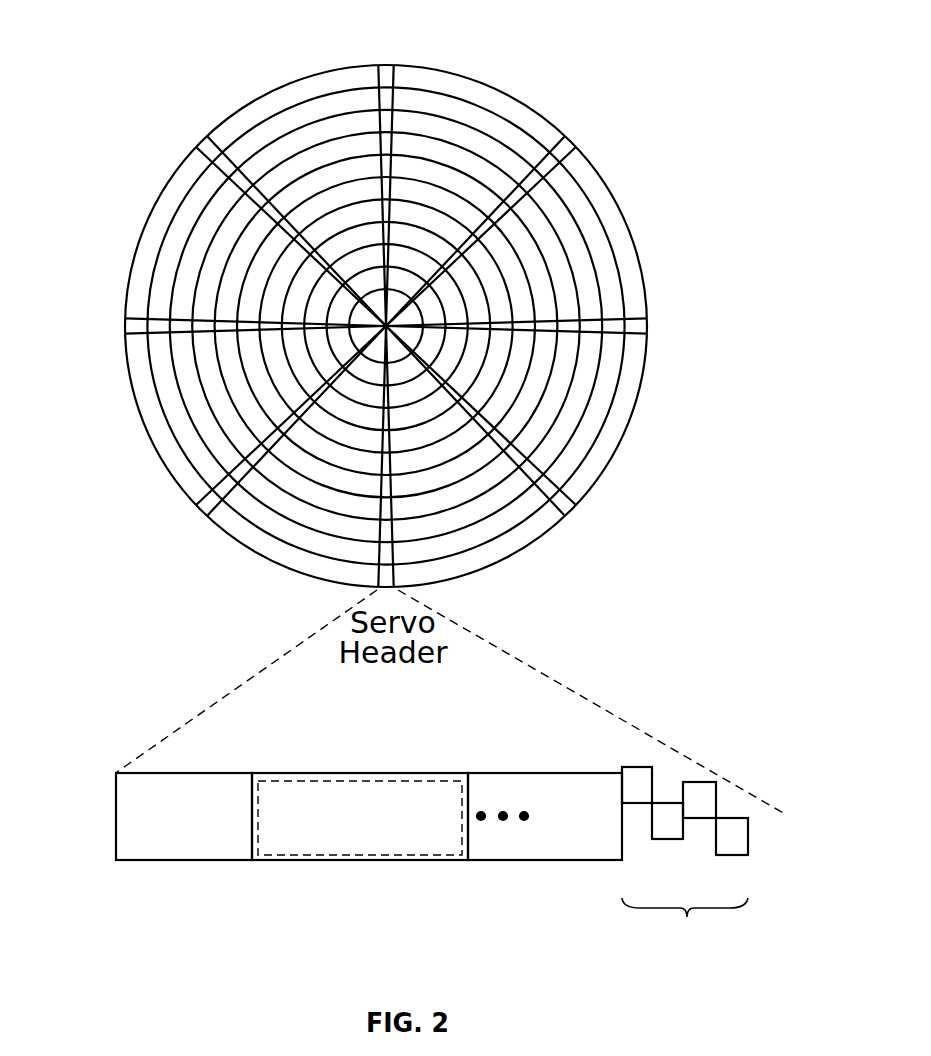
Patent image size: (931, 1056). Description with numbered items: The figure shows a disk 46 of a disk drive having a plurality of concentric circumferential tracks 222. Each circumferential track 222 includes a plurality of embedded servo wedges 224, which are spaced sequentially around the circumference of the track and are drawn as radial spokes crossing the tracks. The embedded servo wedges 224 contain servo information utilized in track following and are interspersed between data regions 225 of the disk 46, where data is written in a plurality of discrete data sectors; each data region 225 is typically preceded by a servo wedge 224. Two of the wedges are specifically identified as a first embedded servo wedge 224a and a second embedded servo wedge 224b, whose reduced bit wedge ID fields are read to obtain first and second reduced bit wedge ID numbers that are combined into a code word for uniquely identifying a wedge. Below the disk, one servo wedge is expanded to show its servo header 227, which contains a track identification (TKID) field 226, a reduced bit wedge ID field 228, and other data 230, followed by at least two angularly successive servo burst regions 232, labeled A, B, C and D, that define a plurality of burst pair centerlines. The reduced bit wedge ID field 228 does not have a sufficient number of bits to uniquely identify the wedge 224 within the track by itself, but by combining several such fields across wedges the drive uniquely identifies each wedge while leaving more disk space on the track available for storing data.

The disk 46 is at (158, 46).
The concentric tracks 222 is at (154, 240).
The embedded servo wedges 224 is at (385, 72).
The first embedded servo wedge 224a is at (203, 147).
The second embedded servo wedge 224b is at (135, 330).
The data regions 225 is at (457, 112).
The track identification (TKID) field 226 is at (188, 862).
The servo header 227 is at (473, 642).
The reduced bit wedge ID field 228 is at (367, 862).
The other data 230 is at (547, 860).
The servo burst regions 232 is at (616, 751).